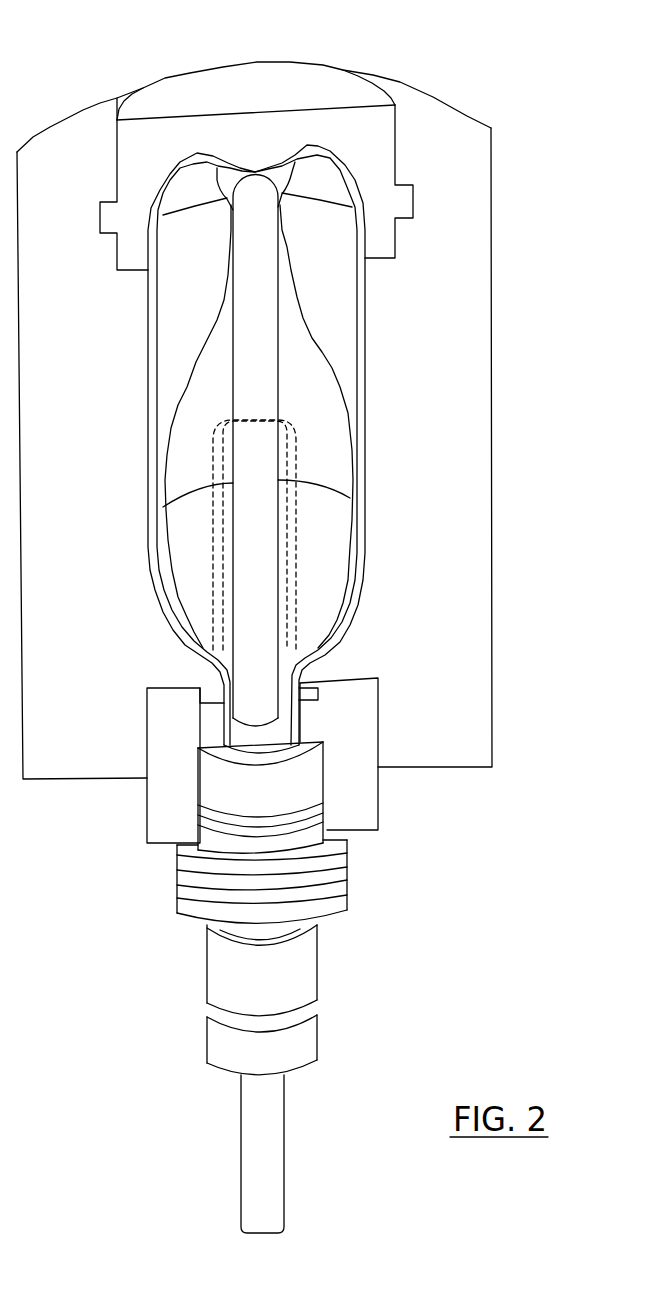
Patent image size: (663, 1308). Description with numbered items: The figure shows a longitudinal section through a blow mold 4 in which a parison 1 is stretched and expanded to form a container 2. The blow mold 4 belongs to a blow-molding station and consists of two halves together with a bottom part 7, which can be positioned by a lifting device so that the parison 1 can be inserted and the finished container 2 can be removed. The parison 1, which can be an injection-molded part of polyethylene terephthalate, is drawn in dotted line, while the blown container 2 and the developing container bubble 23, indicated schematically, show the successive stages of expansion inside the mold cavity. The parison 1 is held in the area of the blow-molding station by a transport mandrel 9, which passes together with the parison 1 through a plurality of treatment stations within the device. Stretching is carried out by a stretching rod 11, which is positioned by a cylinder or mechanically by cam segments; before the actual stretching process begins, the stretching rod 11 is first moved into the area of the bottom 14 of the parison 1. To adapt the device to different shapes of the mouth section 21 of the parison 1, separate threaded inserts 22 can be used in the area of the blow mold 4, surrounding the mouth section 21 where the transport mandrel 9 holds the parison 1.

The parison 1 is at (290, 577).
The container 2 is at (365, 357).
The blow mold 4 is at (452, 422).
The bottom part 7 is at (337, 78).
The transport mandrel 9 is at (333, 893).
The stretching rod 11 is at (241, 1168).
The bottom 14 is at (233, 420).
The mouth section 21 is at (300, 708).
The threaded inserts 22 is at (360, 793).
The container bubble 23 is at (300, 320).